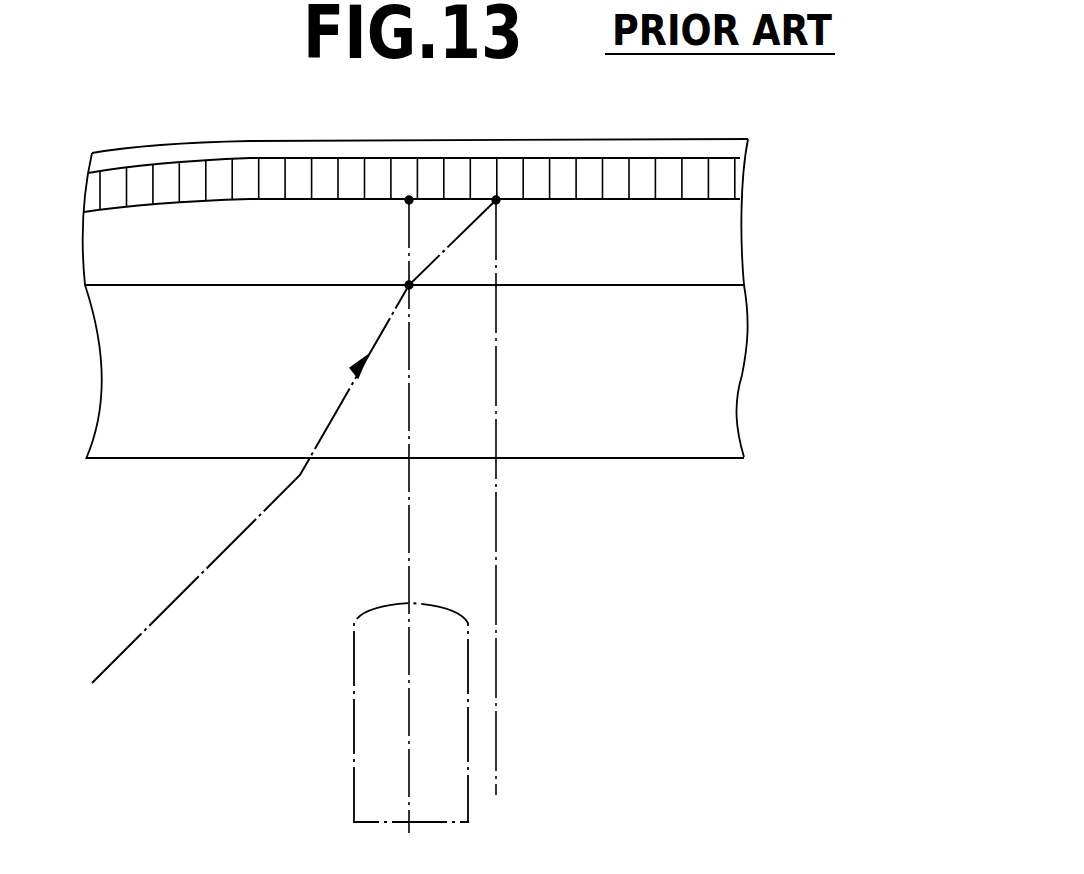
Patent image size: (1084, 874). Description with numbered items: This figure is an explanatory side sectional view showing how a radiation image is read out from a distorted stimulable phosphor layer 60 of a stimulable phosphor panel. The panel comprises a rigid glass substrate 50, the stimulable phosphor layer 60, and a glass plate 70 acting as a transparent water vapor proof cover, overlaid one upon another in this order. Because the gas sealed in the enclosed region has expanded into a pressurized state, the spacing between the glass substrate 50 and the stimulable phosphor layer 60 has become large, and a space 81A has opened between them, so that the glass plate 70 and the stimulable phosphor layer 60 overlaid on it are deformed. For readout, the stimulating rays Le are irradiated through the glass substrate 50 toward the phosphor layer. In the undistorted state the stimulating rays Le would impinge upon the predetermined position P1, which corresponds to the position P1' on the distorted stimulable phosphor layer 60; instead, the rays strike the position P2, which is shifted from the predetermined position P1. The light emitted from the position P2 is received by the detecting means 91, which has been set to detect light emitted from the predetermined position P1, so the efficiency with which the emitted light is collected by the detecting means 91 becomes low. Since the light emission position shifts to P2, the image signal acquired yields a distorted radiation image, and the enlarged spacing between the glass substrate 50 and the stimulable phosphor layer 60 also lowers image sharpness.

The glass plate 70 is at (703, 149).
The stimulable phosphor layer 60 is at (727, 178).
The space 81A is at (728, 262).
The glass substrate 50 is at (727, 373).
The detecting means 91 is at (365, 751).
The stimulating rays Le is at (158, 618).
The predetermined position P1 is at (442, 327).
The position on distorted stimulable phosphor layer P1' is at (366, 223).
The shifted position P2 is at (497, 203).